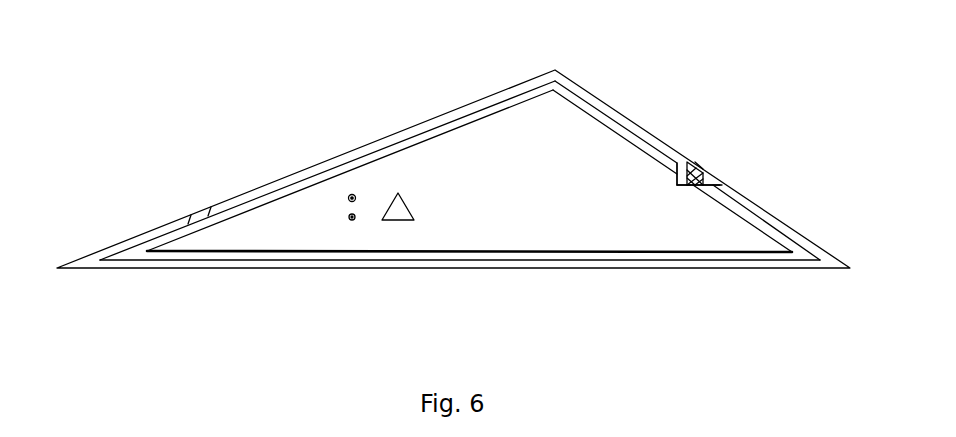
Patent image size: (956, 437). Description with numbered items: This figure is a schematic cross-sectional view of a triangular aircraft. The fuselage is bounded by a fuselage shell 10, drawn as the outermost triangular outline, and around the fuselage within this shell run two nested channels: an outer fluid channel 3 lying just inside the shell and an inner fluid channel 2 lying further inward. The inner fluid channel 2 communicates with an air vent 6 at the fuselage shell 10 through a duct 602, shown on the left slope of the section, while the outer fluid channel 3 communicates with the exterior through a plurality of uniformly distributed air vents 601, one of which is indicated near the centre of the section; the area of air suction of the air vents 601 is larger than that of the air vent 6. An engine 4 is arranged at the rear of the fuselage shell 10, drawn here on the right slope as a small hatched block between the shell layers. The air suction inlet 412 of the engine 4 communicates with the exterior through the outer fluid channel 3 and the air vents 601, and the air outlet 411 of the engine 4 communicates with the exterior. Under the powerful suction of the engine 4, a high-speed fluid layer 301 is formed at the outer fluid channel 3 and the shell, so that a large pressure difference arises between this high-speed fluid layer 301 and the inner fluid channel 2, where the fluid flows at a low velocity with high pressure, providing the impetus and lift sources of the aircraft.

The fuselage shell 10 is at (453, 141).
The high-speed fluid layer 301 is at (327, 154).
The outer fluid channel 3 is at (460, 164).
The inner fluid channel 2 is at (469, 171).
The duct 602 is at (165, 178).
The air suction inlet 412 is at (718, 136).
The engine 4 is at (723, 149).
The air outlet 411 is at (766, 160).
The air vent 6 is at (311, 256).
The air vents 601 is at (361, 254).